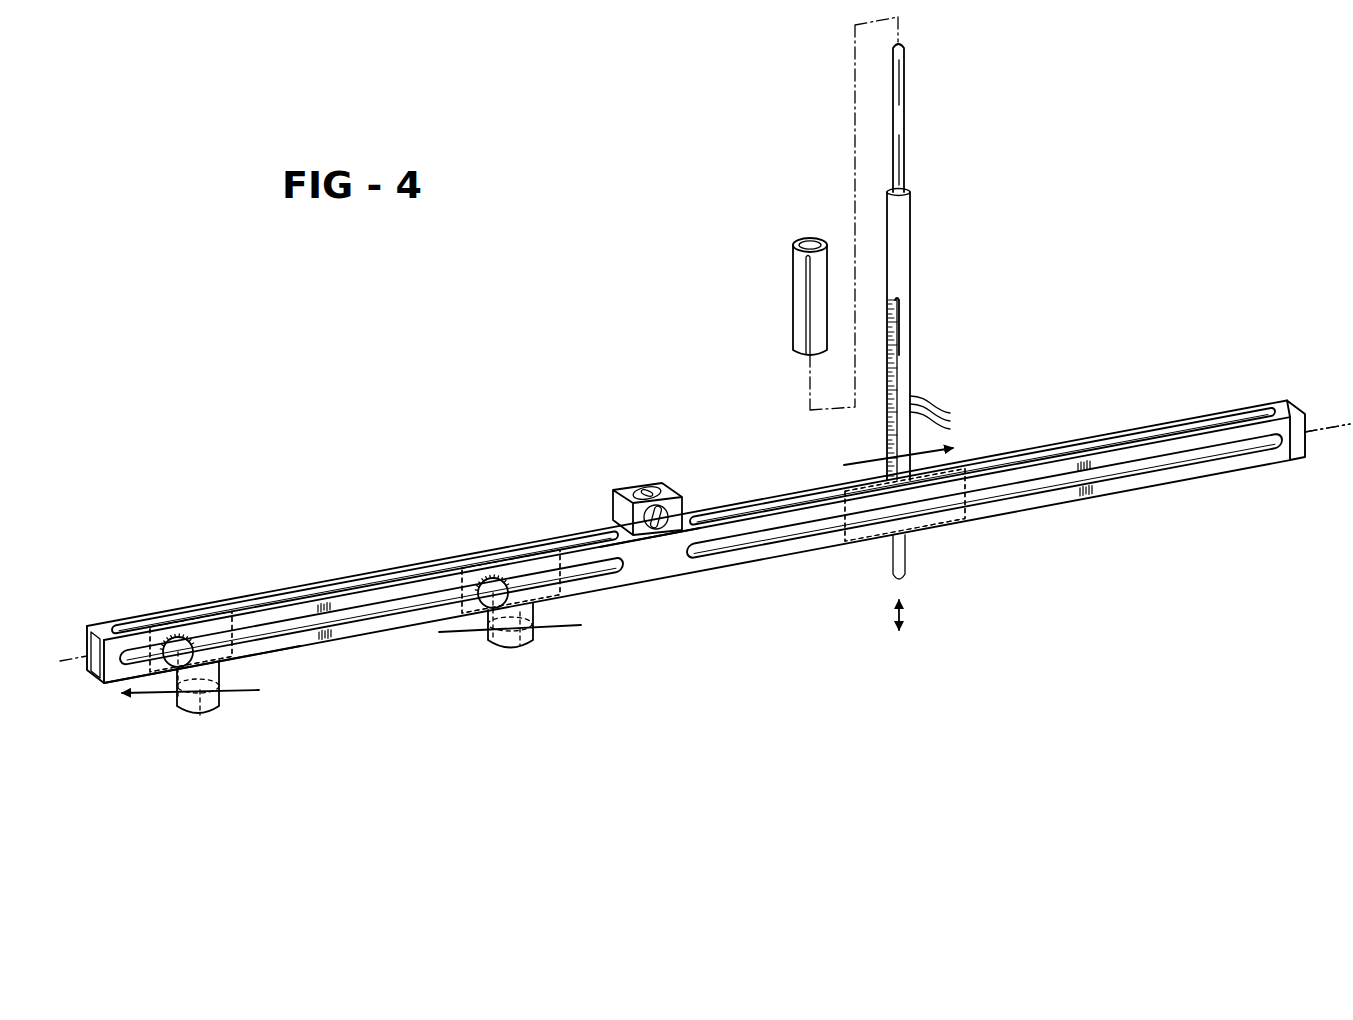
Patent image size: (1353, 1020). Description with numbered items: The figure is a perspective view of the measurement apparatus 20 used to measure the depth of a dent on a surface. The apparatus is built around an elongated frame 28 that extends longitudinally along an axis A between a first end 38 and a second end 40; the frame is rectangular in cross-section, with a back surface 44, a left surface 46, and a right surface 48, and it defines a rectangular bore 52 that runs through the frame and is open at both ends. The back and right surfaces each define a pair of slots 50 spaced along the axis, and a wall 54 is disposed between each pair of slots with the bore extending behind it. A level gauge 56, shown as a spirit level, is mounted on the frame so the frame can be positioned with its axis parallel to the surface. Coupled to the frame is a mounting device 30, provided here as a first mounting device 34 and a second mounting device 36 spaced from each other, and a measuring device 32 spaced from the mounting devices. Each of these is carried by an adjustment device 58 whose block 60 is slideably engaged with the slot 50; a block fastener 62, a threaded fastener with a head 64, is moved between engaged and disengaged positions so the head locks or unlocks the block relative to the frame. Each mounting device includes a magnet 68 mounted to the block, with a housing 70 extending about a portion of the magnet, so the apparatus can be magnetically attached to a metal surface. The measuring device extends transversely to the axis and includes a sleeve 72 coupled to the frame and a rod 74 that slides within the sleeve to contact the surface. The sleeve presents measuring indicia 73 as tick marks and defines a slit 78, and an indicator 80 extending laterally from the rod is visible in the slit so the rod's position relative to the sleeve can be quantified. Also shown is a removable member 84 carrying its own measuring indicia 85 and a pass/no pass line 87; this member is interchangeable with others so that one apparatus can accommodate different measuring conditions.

The measurement apparatus 20 is at (1016, 292).
The frame 28 is at (704, 571).
The mounting device 30 is at (367, 680).
The measuring device 32 is at (897, 323).
The first mounting device 34 is at (220, 704).
The second mounting device 36 is at (537, 640).
The first end 38 is at (1302, 460).
The second end 40 is at (104, 686).
The back surface 44 is at (590, 533).
The left surface 46 is at (90, 646).
The right surface 48 is at (660, 568).
The slot 50 is at (322, 630).
The bore 52 is at (87, 668).
The wall 54 is at (668, 558).
The level gauge 56 is at (628, 491).
The adjustment device 58 is at (613, 534).
The block 60 is at (245, 620).
The block fastener 62 is at (176, 665).
The head 64 is at (184, 640).
The magnet 68 is at (200, 688).
The housing 70 is at (222, 668).
The sleeve 72 is at (903, 264).
The measuring indicia 73 is at (947, 416).
The rod 74 is at (898, 138).
The slit 78 is at (905, 378).
The indicator 80 is at (897, 352).
The removable member 84 is at (766, 291).
The measuring indicia 85 is at (763, 305).
The pass/no pass line 87 is at (820, 305).
The axis A is at (1318, 430).